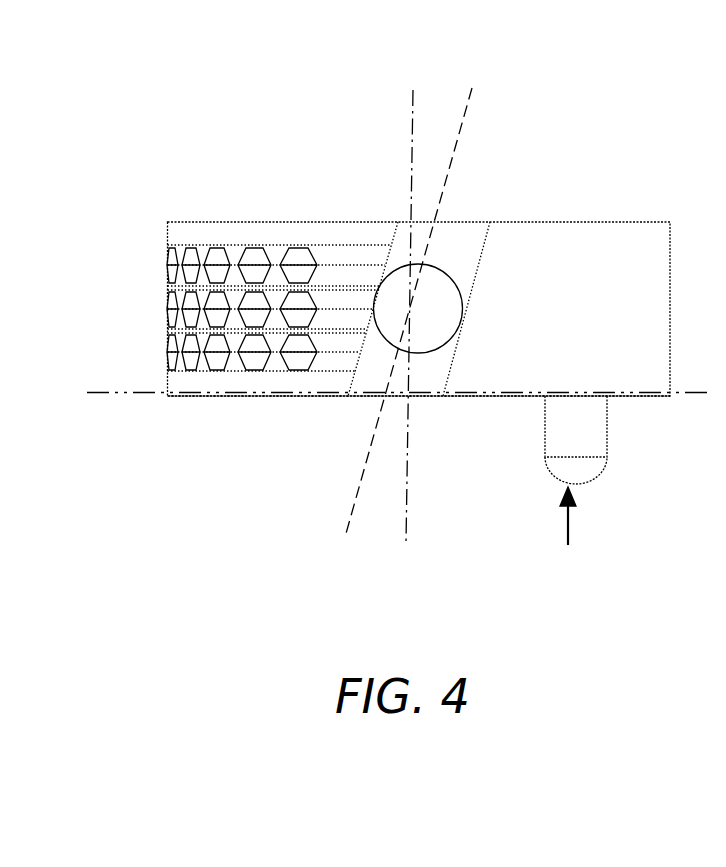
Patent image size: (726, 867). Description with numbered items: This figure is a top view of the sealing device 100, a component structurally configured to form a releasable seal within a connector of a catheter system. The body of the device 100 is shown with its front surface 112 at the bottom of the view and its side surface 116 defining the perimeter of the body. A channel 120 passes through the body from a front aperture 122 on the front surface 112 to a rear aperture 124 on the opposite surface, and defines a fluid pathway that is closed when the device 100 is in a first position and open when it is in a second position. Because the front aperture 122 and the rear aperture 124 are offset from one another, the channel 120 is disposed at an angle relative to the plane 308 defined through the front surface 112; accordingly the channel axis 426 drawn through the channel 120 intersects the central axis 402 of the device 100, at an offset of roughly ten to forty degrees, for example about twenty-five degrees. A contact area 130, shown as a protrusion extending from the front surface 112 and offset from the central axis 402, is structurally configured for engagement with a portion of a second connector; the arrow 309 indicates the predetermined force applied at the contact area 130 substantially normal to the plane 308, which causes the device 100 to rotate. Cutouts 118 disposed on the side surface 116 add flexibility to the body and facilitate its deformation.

The device 100 is at (224, 60).
The front surface 112 is at (242, 398).
The side surface 116 is at (567, 331).
The cutouts 118 is at (213, 265).
The channel 120 is at (460, 252).
The front aperture 122 is at (372, 397).
The rear aperture 124 is at (403, 222).
The contact area 130 is at (590, 476).
The plane 308 is at (105, 398).
The arrow 309 is at (568, 530).
The central axis 402 is at (406, 535).
The channel axis 426 is at (352, 512).